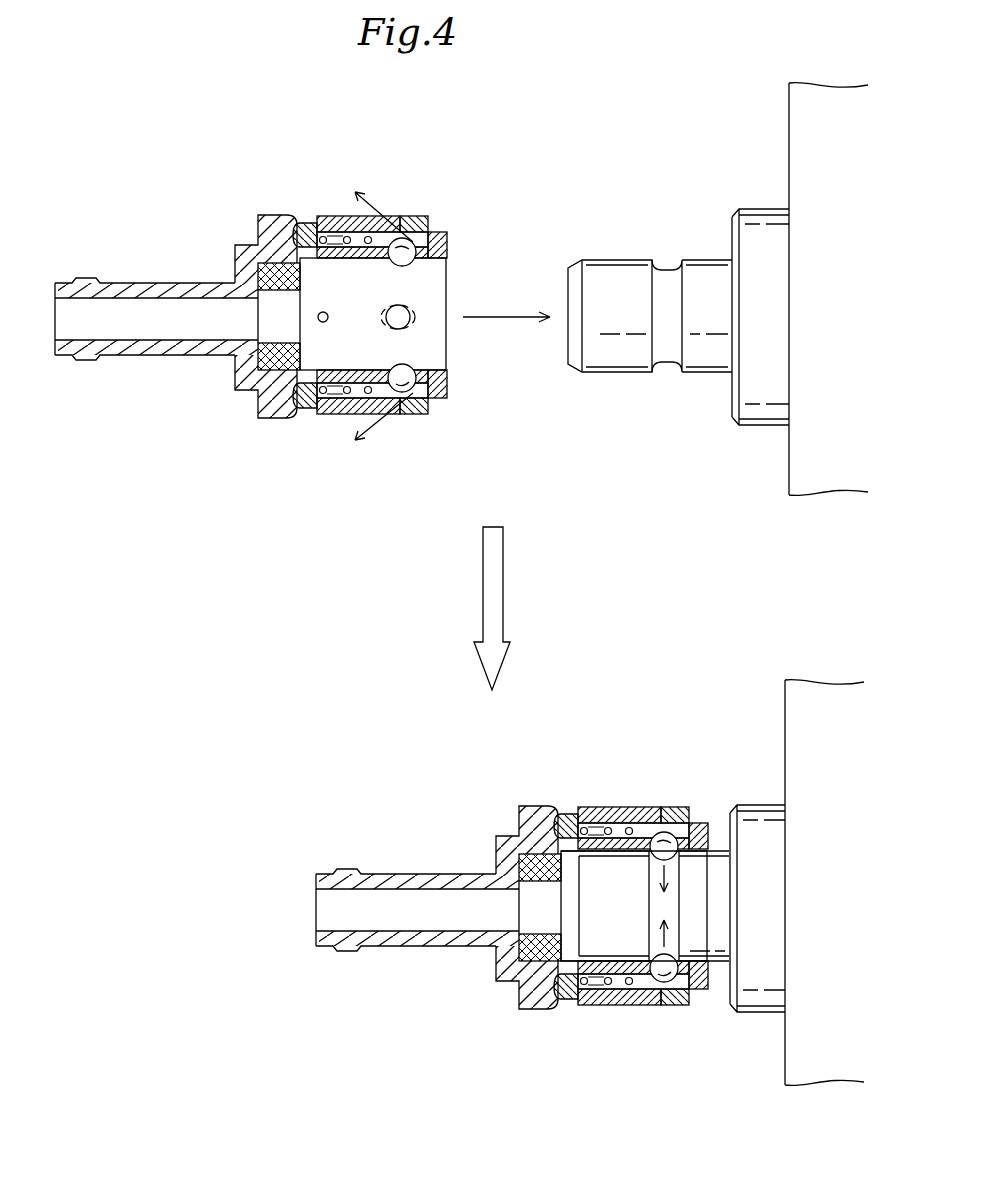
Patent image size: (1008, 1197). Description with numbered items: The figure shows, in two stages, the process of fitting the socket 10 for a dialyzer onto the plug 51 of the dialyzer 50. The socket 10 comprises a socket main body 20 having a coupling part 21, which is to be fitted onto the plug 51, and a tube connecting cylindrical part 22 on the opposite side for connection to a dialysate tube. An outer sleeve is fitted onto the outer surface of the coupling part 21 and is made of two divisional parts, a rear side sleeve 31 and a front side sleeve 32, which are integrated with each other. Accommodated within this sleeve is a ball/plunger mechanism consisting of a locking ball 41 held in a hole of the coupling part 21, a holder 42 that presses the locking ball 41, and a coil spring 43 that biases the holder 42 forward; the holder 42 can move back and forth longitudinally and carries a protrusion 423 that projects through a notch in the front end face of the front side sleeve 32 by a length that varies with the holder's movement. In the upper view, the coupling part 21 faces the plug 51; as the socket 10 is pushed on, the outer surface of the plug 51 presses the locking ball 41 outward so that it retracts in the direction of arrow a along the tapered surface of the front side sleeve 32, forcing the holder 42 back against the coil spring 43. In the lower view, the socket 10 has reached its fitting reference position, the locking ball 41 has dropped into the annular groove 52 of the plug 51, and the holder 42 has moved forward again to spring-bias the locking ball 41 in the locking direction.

The socket 10 is at (221, 439).
The socket main body 20 is at (235, 253).
The coupling part 21 is at (432, 333).
The tube connecting cylindrical part 22 is at (150, 283).
The rear side sleeve 31 is at (310, 226).
The front side sleeve 32 is at (397, 216).
The locking ball 41 is at (414, 264).
The holder 42 is at (363, 414).
The protrusion 423 is at (442, 240).
The coil spring 43 is at (297, 418).
The dialyzer 50 is at (822, 334).
The plug 51 is at (606, 280).
The annular groove 52 is at (664, 352).
The arrow a is at (374, 315).